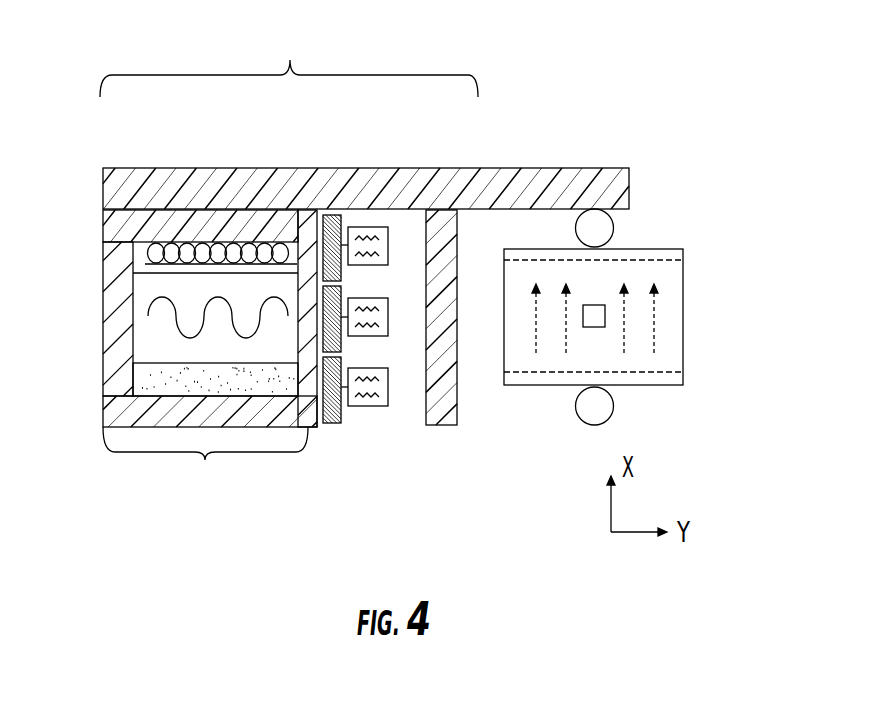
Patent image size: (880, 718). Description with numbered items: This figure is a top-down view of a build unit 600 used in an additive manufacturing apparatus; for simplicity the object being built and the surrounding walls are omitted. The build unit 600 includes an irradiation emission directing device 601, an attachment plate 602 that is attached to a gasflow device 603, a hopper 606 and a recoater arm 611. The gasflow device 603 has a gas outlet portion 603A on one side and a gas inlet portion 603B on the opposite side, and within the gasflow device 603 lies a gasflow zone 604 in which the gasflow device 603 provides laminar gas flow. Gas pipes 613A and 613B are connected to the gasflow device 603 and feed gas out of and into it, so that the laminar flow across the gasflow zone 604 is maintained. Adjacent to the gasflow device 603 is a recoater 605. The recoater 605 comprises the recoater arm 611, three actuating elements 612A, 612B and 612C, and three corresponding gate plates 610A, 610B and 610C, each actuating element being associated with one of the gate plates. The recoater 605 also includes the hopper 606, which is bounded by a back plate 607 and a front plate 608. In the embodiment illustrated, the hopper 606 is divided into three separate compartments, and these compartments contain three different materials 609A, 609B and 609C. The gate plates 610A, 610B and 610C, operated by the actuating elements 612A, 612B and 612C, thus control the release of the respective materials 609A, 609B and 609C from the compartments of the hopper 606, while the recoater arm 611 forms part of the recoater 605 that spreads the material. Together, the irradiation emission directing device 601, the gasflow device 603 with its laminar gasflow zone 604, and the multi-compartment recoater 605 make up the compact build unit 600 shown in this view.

The build unit 600 is at (677, 160).
The irradiation emission directing device 601 is at (590, 305).
The attachment plate 602 is at (285, 167).
The gasflow device 603 is at (683, 336).
The gas outlet portion 603A is at (678, 378).
The gas inlet portion 603B is at (683, 253).
The gasflow zone 604 is at (553, 343).
The recoater 605 is at (289, 59).
The hopper 606 is at (205, 463).
The back plate 607 is at (102, 296).
The front plate 608 is at (308, 428).
The first material 609A is at (143, 263).
The second material 609B is at (150, 312).
The third material 609C is at (133, 383).
The first gate plate 610A is at (332, 424).
The second gate plate 610B is at (343, 293).
The third gate plate 610C is at (332, 215).
The recoater arm 611 is at (458, 419).
The first actuating element 612A is at (369, 407).
The second actuating element 612B is at (372, 336).
The third actuating element 612C is at (367, 227).
The first gas pipe 613A is at (614, 230).
The second gas pipe 613B is at (614, 406).